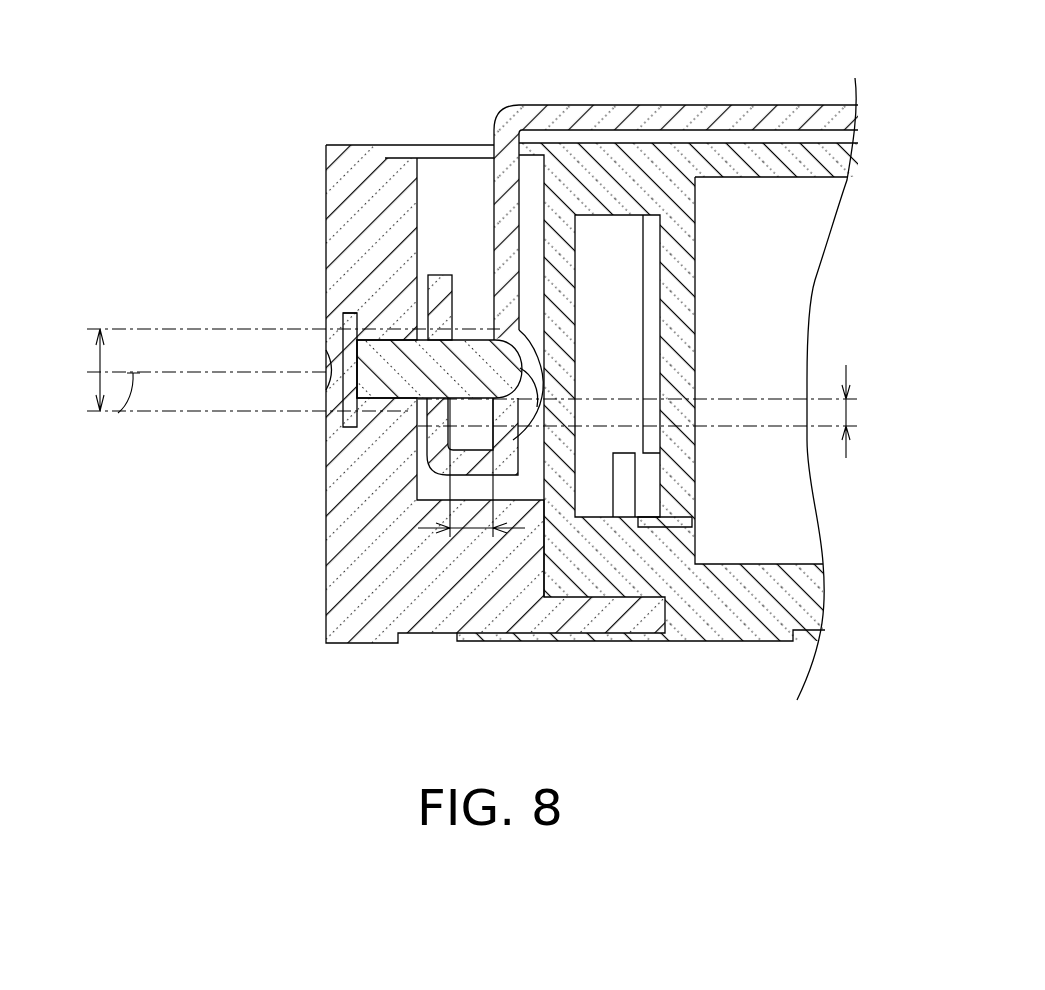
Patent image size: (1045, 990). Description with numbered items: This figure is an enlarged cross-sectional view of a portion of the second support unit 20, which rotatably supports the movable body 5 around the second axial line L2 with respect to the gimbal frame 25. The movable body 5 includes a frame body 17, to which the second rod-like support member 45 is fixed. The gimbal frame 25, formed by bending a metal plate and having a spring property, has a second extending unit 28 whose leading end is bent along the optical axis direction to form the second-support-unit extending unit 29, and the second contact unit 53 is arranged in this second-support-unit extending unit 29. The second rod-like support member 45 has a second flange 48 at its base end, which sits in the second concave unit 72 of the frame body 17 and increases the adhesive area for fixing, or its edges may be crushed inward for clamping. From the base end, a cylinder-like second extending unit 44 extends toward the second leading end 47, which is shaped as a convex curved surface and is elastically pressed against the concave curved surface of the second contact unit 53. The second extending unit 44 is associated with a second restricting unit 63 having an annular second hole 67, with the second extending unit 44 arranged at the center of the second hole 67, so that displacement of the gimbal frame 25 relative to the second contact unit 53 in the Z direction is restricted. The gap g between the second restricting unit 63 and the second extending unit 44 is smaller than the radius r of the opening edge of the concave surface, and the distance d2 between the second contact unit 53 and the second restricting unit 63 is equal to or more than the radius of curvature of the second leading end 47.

The movable body 5 is at (352, 146).
The frame body 17 is at (543, 488).
The second support unit 20 is at (291, 277).
The gimbal frame 25 is at (650, 79).
The second extending unit 28 is at (586, 105).
The second-support-unit extending unit 29 is at (493, 283).
The second extending unit 44 is at (345, 427).
The second rod-like support member 45 is at (407, 373).
The second leading end 47 is at (540, 357).
The second flange 48 is at (343, 325).
The second contact unit 53 is at (520, 348).
The second restricting unit 63 is at (443, 273).
The second hole 67 is at (358, 340).
The second concave unit 72 is at (328, 412).
The radius r is at (97, 392).
The second axial line L2 is at (112, 425).
The distance d2 is at (473, 532).
The gap g is at (848, 400).